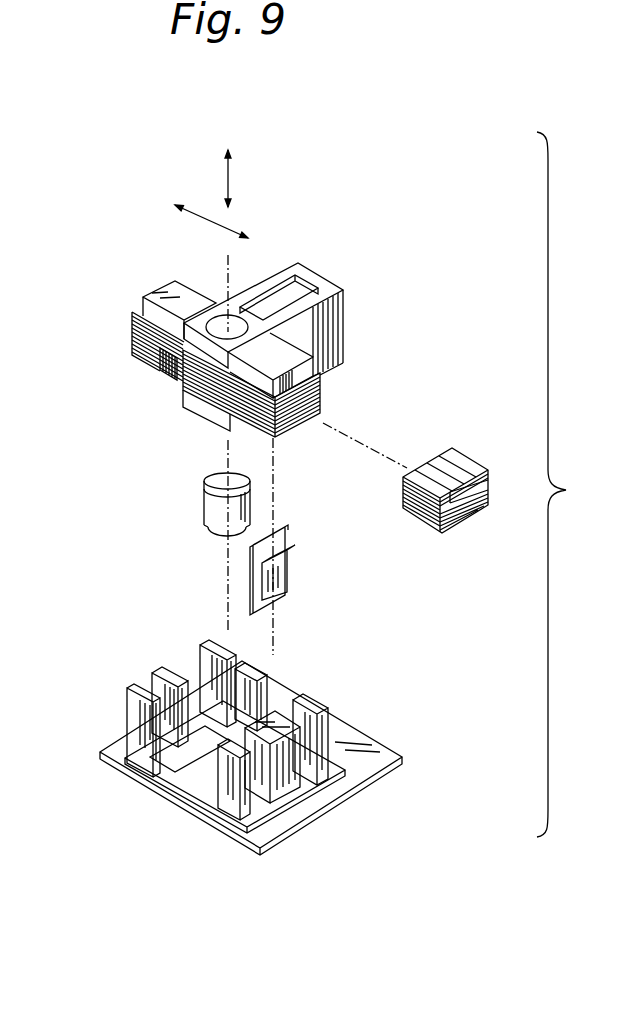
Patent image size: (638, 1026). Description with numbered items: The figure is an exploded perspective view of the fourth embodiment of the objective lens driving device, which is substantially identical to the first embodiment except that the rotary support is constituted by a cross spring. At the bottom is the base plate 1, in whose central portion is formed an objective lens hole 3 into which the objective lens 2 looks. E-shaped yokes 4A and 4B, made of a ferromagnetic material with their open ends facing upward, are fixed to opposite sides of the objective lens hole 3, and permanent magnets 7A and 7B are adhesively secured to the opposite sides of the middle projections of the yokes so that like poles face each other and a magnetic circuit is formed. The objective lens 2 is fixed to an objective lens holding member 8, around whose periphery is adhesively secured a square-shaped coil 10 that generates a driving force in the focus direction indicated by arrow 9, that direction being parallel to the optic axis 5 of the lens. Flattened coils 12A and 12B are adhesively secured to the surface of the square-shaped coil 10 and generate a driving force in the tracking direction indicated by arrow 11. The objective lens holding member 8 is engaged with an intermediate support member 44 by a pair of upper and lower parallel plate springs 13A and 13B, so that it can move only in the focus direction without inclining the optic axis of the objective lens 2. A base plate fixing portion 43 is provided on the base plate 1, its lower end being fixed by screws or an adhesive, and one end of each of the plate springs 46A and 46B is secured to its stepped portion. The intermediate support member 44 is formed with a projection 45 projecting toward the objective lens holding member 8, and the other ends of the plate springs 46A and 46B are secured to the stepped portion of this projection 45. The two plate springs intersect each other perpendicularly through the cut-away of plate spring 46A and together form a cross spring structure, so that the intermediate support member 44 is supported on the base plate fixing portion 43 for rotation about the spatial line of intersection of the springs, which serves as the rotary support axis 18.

The base plate 1 is at (357, 763).
The objective lens 2 is at (208, 514).
The objective lens hole 3 is at (197, 773).
The E-shaped yoke 4A is at (237, 803).
The E-shaped yoke 4B is at (137, 752).
The optic axis 5 is at (228, 570).
The permanent magnet 7A is at (268, 795).
The permanent magnet 7B is at (302, 763).
The objective lens holding member 8 is at (168, 294).
The focus direction arrow 9 is at (228, 180).
The square-shaped coil 10 is at (322, 417).
The tracking direction arrow 11 is at (222, 222).
The flattened coil 12A is at (477, 460).
The flattened coil 12B is at (132, 320).
The parallel plate spring 13A is at (322, 338).
The parallel plate spring 13B is at (330, 378).
The rotary support axis 18 is at (273, 503).
The base plate fixing portion 43 is at (257, 663).
The intermediate support member 44 is at (343, 292).
The projection 45 is at (302, 294).
The plate spring 46A is at (287, 540).
The plate spring 46B is at (288, 583).